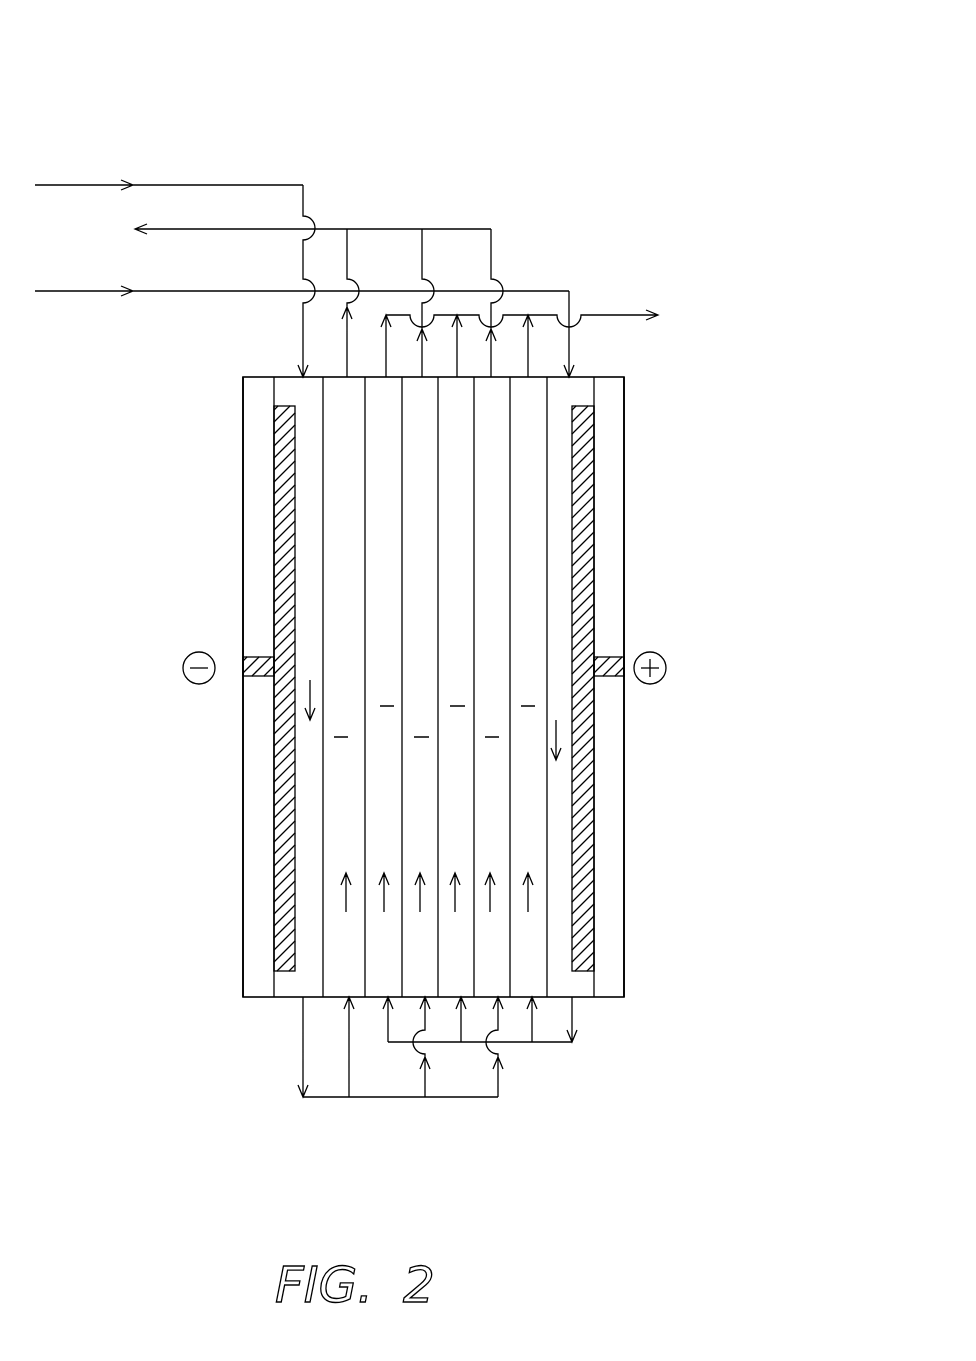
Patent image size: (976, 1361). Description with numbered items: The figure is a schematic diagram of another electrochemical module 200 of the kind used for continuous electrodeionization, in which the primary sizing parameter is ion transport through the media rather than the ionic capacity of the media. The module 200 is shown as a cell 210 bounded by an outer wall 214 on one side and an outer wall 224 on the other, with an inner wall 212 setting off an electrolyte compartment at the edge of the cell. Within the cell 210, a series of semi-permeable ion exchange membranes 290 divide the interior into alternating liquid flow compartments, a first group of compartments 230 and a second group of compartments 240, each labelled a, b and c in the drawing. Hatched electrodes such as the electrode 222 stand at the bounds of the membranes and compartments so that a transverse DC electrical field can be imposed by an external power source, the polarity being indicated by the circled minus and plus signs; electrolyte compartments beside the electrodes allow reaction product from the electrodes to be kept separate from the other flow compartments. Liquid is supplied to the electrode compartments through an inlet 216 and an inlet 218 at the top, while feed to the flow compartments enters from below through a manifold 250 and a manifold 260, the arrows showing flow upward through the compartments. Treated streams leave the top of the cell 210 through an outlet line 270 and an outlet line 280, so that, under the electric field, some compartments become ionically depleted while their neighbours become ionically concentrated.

The electrochemical cell system 200 is at (204, 43).
The cell housing 210 is at (583, 397).
The inner wall 212 is at (595, 483).
The outer wall 214 is at (625, 557).
The electrolyte inlet 216 is at (213, 293).
The electrolyte inlet 218 is at (228, 185).
The electrode 222 is at (274, 513).
The outer wall 224 is at (243, 603).
The first set of compartments a, b, c 230 is at (530, 688).
The second set of compartments a, b, c 240 is at (492, 732).
The inlet manifold 250 is at (380, 1097).
The inlet manifold 260 is at (545, 1042).
The outlet line 270 is at (610, 314).
The outlet line 280 is at (365, 229).
The ion exchange membranes 290 is at (473, 964).